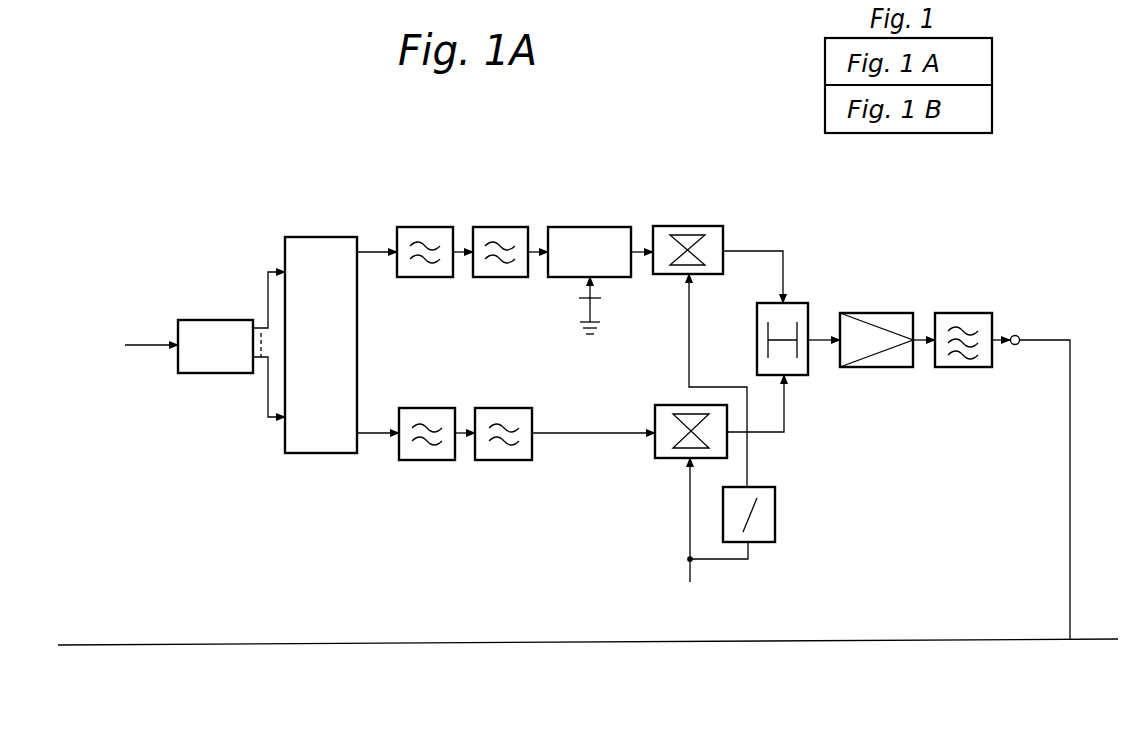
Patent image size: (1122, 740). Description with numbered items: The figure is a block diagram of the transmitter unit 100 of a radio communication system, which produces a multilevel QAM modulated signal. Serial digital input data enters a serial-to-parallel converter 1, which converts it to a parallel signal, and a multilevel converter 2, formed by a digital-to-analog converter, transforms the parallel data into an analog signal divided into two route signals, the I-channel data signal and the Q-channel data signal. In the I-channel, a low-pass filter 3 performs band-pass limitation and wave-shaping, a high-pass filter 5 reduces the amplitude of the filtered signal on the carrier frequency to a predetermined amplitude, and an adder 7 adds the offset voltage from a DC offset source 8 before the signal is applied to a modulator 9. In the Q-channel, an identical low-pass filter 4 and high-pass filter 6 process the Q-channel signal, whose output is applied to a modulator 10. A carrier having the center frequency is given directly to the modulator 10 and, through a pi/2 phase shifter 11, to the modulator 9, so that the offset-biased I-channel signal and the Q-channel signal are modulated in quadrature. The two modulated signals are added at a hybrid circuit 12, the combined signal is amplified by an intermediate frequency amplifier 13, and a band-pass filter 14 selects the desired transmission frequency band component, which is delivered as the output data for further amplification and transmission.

The serial-to-parallel converter 1 is at (216, 320).
The multilevel converter 2 is at (320, 237).
The low-pass filter 3 is at (427, 228).
The low-pass filter 4 is at (440, 408).
The high-pass filter 5 is at (503, 228).
The high-pass filter 6 is at (519, 408).
The adder 7 is at (600, 228).
The DC offset source 8 is at (576, 303).
The modulator 9 is at (701, 226).
The modulator 10 is at (667, 405).
The pi/2 phase shifter 11 is at (776, 512).
The hybrid circuit 12 is at (803, 303).
The intermediate frequency amplifier 13 is at (892, 313).
The band-pass filter 14 is at (964, 313).
The transmitter unit 100 is at (856, 212).